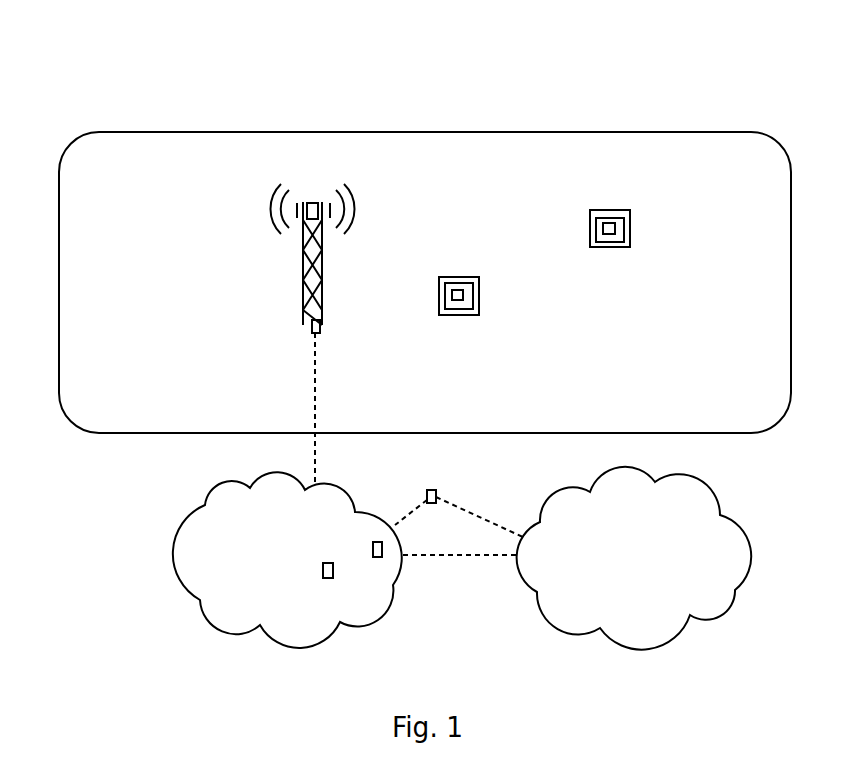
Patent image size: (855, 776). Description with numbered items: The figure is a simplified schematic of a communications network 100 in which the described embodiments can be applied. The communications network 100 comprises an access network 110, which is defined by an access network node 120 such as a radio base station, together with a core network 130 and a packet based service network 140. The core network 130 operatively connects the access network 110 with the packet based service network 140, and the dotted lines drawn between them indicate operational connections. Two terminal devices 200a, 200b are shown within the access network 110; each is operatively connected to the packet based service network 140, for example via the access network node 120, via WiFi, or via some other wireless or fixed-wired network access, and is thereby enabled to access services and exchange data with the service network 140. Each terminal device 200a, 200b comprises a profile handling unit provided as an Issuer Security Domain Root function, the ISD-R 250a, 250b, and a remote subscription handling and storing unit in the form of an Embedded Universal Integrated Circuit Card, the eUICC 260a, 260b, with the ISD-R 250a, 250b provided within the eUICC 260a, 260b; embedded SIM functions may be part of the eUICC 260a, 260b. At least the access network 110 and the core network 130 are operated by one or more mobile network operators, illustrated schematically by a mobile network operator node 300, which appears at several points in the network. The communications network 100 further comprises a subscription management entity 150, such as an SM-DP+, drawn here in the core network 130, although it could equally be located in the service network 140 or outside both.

The communications network 100 is at (112, 77).
The access network 110 is at (148, 168).
The access network node 120 is at (305, 237).
The core network 130 is at (279, 536).
The packet based service network 140 is at (653, 518).
The subscription management entity 150 is at (333, 572).
The terminal device 200a is at (479, 290).
The terminal device 200b is at (690, 232).
The ISD-R function 250a is at (448, 289).
The ISD-R function 250b is at (599, 224).
The eUICC 260a is at (440, 293).
The eUICC 260b is at (610, 247).
The mobile network operator node 300 is at (320, 326).